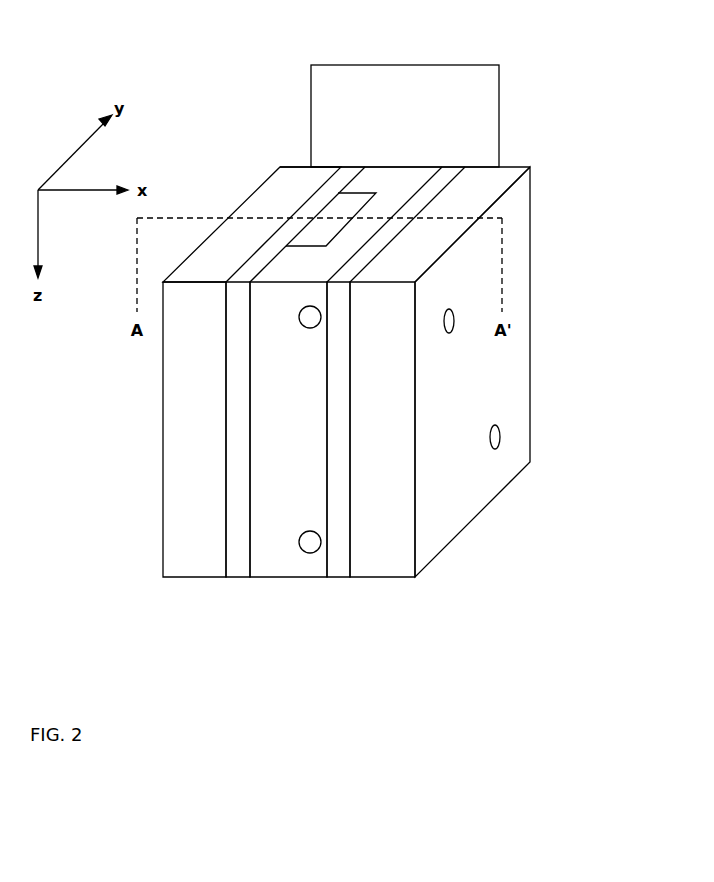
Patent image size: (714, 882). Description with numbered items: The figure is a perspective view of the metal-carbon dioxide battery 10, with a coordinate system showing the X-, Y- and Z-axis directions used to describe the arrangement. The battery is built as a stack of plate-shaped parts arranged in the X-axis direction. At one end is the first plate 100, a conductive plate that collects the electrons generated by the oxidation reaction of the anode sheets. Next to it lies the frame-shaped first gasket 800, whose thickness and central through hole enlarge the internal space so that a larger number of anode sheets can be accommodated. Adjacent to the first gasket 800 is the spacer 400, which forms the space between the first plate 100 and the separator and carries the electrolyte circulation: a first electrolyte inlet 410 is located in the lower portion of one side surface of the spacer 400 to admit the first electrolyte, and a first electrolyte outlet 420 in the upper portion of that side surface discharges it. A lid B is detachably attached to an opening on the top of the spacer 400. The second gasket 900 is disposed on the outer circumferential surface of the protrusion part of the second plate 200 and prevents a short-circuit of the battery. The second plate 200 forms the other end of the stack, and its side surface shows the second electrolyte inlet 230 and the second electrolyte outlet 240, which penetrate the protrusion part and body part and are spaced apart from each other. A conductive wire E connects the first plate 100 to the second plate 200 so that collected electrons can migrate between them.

The metal-carbon dioxide battery 10 is at (222, 60).
The first plate 100 is at (183, 563).
The first gasket 800 is at (240, 568).
The spacer 400 is at (271, 405).
The first electrolyte inlet 410 is at (310, 553).
The first electrolyte outlet 420 is at (298, 318).
The second gasket 900 is at (340, 568).
The second plate 200 is at (437, 411).
The second electrolyte inlet 230 is at (500, 434).
The second electrolyte outlet 240 is at (455, 320).
The conductive wire E is at (353, 65).
The lid B is at (358, 200).